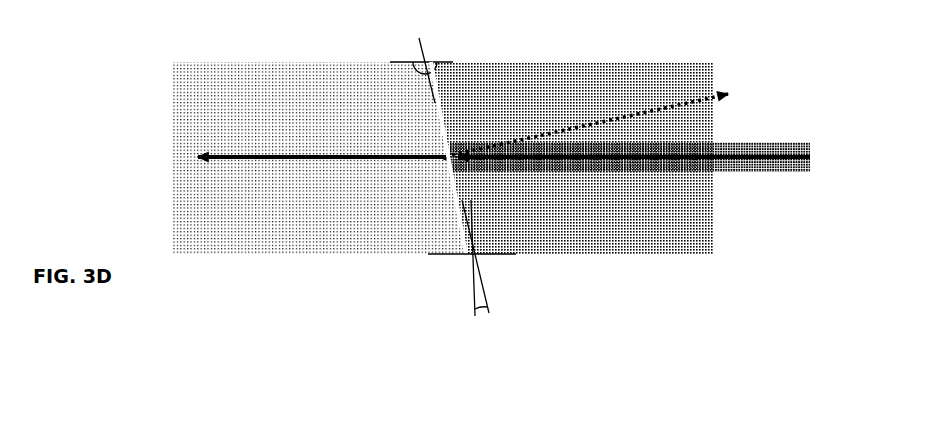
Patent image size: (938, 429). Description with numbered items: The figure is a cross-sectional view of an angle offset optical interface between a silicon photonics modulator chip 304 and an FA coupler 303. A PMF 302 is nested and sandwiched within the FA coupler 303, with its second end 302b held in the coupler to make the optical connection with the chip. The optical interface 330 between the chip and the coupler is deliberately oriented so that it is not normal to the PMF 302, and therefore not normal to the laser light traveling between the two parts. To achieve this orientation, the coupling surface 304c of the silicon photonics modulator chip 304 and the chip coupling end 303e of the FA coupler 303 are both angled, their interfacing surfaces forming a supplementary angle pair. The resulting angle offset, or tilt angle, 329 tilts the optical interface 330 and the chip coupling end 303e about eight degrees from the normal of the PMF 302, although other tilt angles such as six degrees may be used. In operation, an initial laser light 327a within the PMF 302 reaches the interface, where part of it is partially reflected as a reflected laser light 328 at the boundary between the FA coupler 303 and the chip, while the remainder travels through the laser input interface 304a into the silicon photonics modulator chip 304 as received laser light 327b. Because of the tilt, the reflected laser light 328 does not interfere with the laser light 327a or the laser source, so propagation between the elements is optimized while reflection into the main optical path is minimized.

The PMF 302 is at (797, 143).
The second end of the PMF 302b is at (453, 163).
The FA coupler 303 is at (682, 255).
The chip coupling end of the FA coupler 303e is at (460, 126).
The silicon photonics modulator chip 304 is at (270, 255).
The laser input interface 304a is at (428, 148).
The coupling surface of the silicon photonics modulator chip 304c is at (443, 218).
The initial laser light 327a is at (733, 168).
The received laser light 327b is at (285, 157).
The reflected laser light 328 is at (683, 98).
The angle offset (tilt angle) 329 is at (481, 324).
The optical interface 330 is at (431, 126).